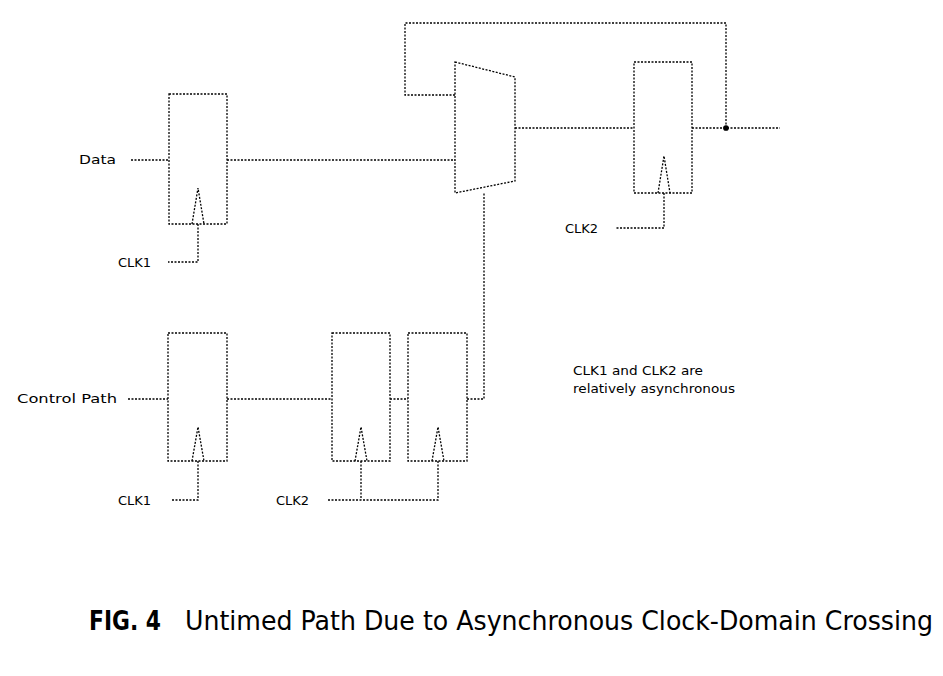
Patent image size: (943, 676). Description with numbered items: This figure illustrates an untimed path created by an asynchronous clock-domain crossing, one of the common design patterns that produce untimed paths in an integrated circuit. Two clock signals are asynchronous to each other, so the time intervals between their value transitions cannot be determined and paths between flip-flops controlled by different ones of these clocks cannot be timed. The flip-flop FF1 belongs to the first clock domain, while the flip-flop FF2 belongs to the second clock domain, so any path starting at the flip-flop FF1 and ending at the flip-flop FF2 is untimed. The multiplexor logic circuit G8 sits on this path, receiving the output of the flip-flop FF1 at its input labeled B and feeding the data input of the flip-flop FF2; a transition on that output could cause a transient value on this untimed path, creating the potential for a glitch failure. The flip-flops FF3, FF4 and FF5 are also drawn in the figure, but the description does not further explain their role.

The flip-flop FF1 is at (198, 159).
The flip-flop FF2 is at (664, 127).
The flip-flop FF3 (CLK1 domain, control path) FF3 is at (199, 397).
The flip-flop FF4 (CLK2 domain synchronizer) FF4 is at (350, 397).
The flip-flop FF5 (CLK2 domain synchronizer) FF5 is at (449, 397).
The multiplexor logic circuit G8 is at (480, 134).